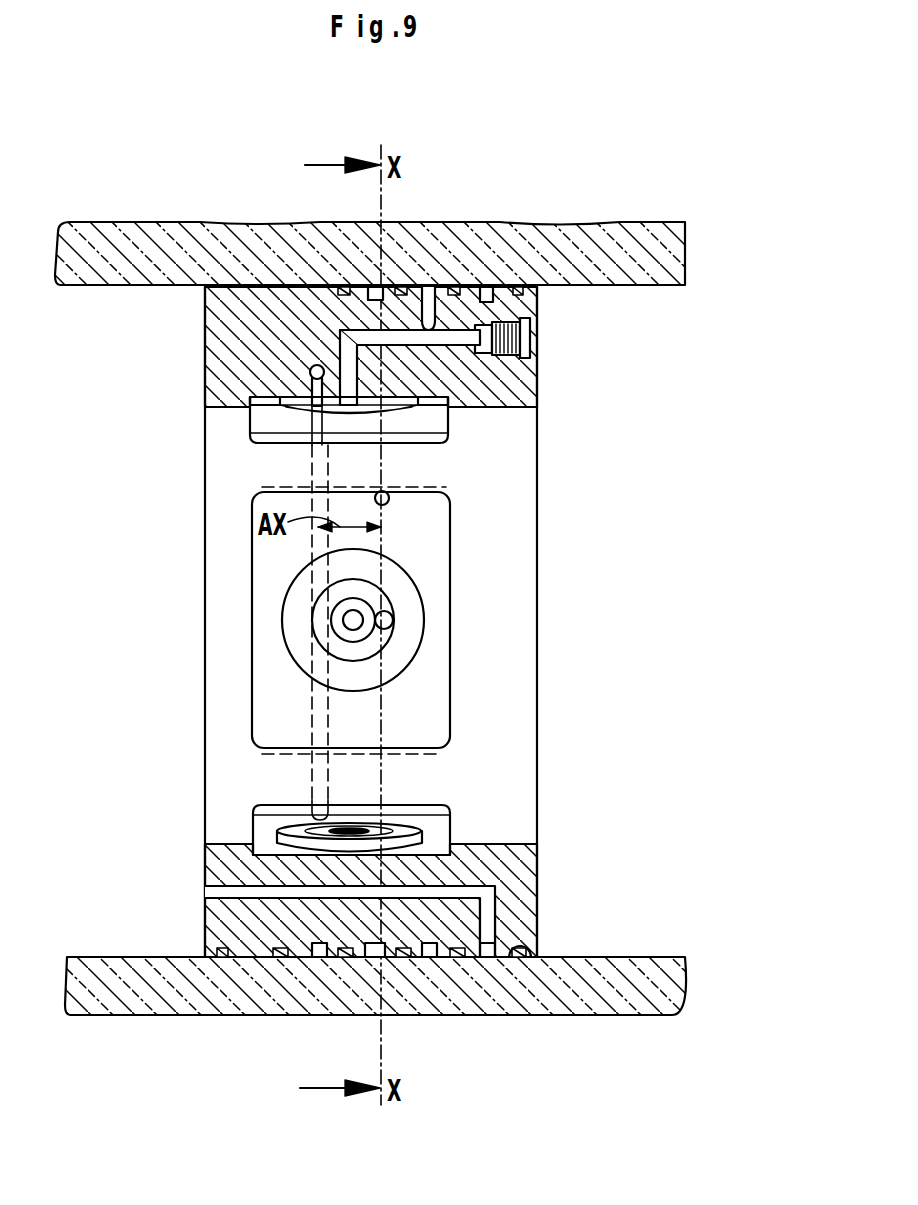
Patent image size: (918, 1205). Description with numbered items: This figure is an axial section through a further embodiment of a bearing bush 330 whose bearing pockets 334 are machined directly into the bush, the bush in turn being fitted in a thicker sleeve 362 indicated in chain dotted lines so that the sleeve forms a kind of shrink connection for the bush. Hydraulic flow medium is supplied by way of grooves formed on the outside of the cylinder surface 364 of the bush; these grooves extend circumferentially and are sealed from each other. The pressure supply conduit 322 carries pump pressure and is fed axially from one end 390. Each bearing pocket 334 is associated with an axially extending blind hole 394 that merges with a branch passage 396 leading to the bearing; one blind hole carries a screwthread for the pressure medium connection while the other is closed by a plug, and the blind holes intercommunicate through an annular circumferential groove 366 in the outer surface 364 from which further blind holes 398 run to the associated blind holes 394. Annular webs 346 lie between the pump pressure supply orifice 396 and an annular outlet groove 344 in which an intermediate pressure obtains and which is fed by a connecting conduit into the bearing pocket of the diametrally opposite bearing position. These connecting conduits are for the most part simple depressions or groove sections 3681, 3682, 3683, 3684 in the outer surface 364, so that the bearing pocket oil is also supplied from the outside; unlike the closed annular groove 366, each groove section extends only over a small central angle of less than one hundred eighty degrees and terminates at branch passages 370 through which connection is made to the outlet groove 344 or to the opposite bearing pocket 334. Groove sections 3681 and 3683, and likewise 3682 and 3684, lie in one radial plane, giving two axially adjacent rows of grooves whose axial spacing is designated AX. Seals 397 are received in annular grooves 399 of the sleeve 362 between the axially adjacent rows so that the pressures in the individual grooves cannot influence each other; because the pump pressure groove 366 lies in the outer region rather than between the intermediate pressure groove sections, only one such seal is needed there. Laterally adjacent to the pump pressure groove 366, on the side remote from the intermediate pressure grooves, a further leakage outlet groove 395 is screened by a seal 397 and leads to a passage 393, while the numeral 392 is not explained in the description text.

The sleeve 362 is at (140, 250).
The pressure supply conduit 322 is at (458, 340).
The bearing bush 330 is at (497, 388).
The bearing pocket 334 is at (437, 565).
The annular outlet groove 344 is at (335, 588).
The annular webs 346 is at (343, 620).
The cylinder surface 364 is at (265, 970).
The annular circumferential groove 366 is at (428, 288).
The groove section 3681 is at (375, 287).
The groove section 3682 is at (320, 958).
The groove section 3683 is at (383, 958).
The groove section 3684 is at (302, 710).
The branch passage 370 is at (388, 493).
The end 390 is at (538, 864).
The slide plate 392 is at (205, 914).
The passage 393 is at (245, 888).
The blind hole 394 is at (365, 333).
The leakage outlet groove 395 is at (458, 290).
The branch passage 396 is at (335, 342).
The seal 397 is at (222, 960).
The blind hole 398 is at (486, 287).
The annular groove 399 is at (526, 946).